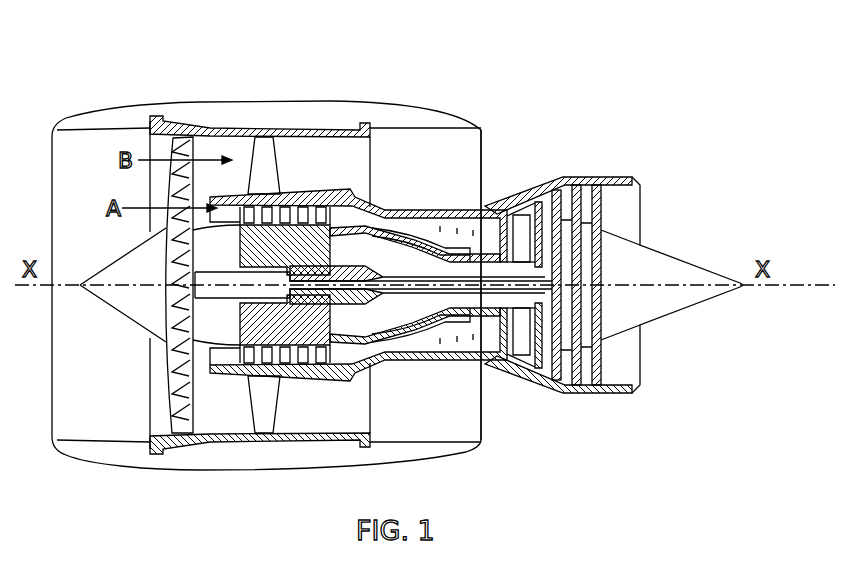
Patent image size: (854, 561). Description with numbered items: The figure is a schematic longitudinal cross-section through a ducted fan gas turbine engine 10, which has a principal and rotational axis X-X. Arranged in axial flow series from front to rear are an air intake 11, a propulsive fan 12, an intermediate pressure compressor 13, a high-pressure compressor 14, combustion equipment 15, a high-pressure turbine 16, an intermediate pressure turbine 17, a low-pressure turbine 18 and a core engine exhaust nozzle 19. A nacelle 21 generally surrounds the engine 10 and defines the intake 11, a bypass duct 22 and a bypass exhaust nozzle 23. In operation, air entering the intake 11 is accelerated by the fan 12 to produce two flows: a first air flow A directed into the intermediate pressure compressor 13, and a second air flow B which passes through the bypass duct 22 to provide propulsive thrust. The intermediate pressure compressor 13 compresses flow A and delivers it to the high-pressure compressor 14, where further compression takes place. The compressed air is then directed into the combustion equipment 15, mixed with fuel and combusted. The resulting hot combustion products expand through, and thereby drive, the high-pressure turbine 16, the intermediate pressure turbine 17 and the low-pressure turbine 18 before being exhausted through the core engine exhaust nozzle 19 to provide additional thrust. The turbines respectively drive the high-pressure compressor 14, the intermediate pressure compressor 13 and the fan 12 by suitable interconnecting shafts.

The ducted fan gas turbine engine 10 is at (92, 65).
The air intake 11 is at (100, 129).
The propulsive fan 12 is at (177, 397).
The intermediate pressure compressor 13 is at (300, 360).
The high-pressure compressor 14 is at (417, 212).
The combustion equipment 15 is at (437, 358).
The high-pressure turbine 16 is at (503, 363).
The intermediate pressure turbine 17 is at (533, 200).
The low-pressure turbine 18 is at (553, 388).
The core engine exhaust nozzle 19 is at (630, 182).
The nacelle 21 is at (302, 112).
The bypass duct 22 is at (440, 167).
The bypass exhaust nozzle 23 is at (481, 128).